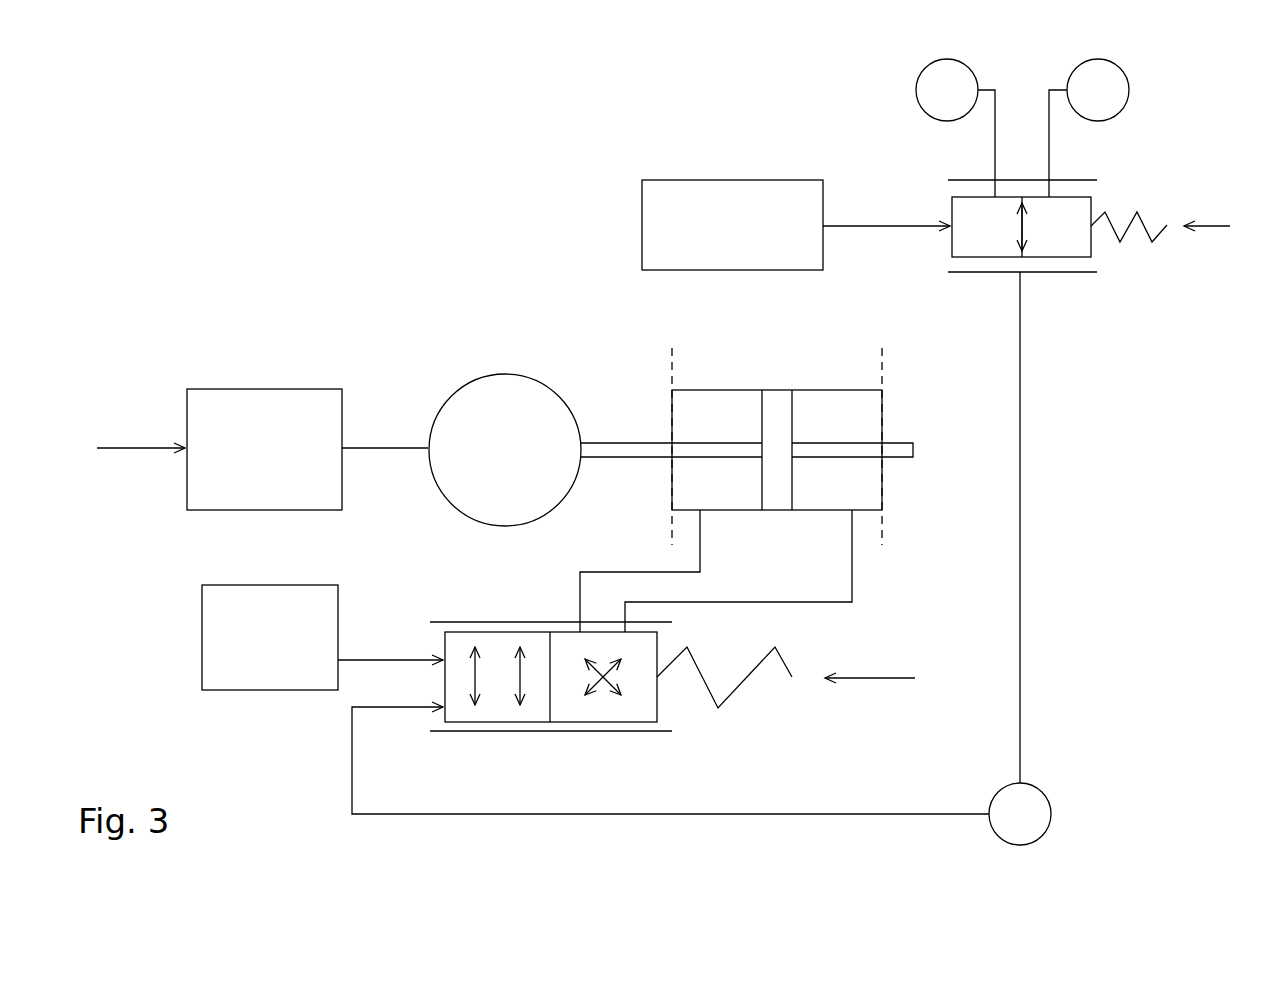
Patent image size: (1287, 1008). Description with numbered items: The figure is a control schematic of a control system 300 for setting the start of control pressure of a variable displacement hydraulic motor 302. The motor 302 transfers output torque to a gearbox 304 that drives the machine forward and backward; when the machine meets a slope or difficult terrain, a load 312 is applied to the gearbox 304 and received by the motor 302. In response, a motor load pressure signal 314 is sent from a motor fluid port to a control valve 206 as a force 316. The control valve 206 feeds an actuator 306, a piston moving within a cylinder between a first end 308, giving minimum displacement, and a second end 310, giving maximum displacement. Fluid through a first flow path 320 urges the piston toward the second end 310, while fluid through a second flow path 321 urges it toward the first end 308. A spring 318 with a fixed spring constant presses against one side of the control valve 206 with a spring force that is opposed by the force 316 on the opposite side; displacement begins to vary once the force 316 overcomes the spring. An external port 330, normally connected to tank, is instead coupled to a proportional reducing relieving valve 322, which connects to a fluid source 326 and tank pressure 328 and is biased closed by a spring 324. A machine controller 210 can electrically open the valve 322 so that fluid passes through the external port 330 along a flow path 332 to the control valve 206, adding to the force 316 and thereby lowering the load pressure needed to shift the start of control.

The control system 300 is at (290, 186).
The control valve 206 is at (602, 739).
The machine controller 210 is at (796, 225).
The variable displacement hydraulic motor 302 is at (595, 450).
The gearbox 304 is at (307, 449).
The actuator 306 is at (778, 370).
The first end 308 is at (668, 355).
The second end 310 is at (884, 355).
The load 312 is at (128, 446).
The motor load pressure signal 314 is at (270, 637).
The motor load pressure signal force 316 is at (392, 658).
The spring 318 is at (749, 697).
The first flow path 320 is at (701, 540).
The second flow path 321 is at (853, 580).
The proportional reducing relieving valve 322 is at (1038, 284).
The spring 324 is at (1157, 252).
The fluid source 326 is at (916, 90).
The tank pressure 328 is at (1129, 90).
The external port 330 is at (1051, 816).
The flow path 332 is at (351, 758).